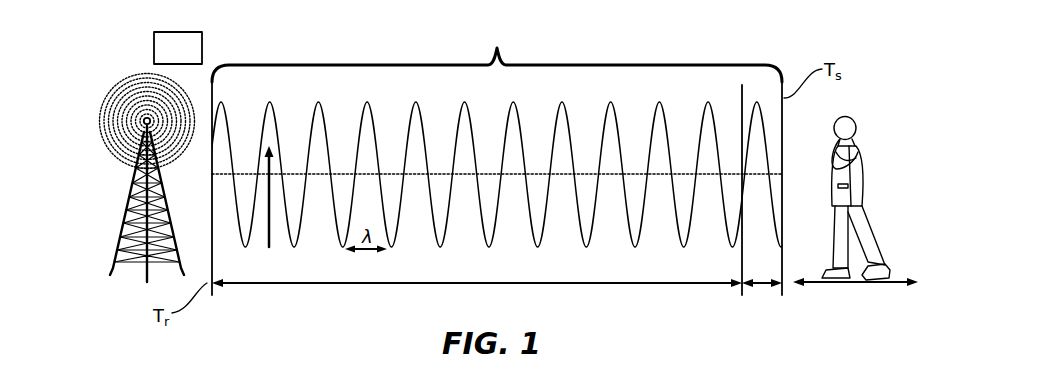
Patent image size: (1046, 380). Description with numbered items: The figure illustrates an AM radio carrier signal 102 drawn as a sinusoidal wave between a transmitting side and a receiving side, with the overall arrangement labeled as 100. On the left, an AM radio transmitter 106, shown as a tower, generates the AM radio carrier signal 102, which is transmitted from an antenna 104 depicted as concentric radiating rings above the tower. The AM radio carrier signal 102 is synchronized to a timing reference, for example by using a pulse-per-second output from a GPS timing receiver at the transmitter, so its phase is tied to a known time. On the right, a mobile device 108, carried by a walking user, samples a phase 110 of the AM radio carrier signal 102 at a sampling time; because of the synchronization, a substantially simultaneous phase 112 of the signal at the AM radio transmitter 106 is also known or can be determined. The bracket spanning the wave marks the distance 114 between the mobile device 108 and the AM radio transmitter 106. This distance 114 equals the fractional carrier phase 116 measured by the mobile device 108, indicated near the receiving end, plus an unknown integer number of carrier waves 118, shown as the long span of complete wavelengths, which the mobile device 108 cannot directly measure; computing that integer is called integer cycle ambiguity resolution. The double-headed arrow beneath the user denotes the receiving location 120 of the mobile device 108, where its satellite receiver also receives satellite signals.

The system 100 is at (717, 36).
The AM radio carrier signal 102 is at (357, 115).
The antenna 104 is at (146, 116).
The AM radio transmitter 106 is at (125, 200).
The mobile device 108 is at (850, 118).
The phase 110 is at (271, 210).
The substantially simultaneous phase 112 is at (178, 48).
The distance 114 is at (497, 53).
The fractional carrier phase 116 is at (760, 284).
The integer number of carrier waves 118 is at (333, 283).
The receiving location 120 is at (853, 283).